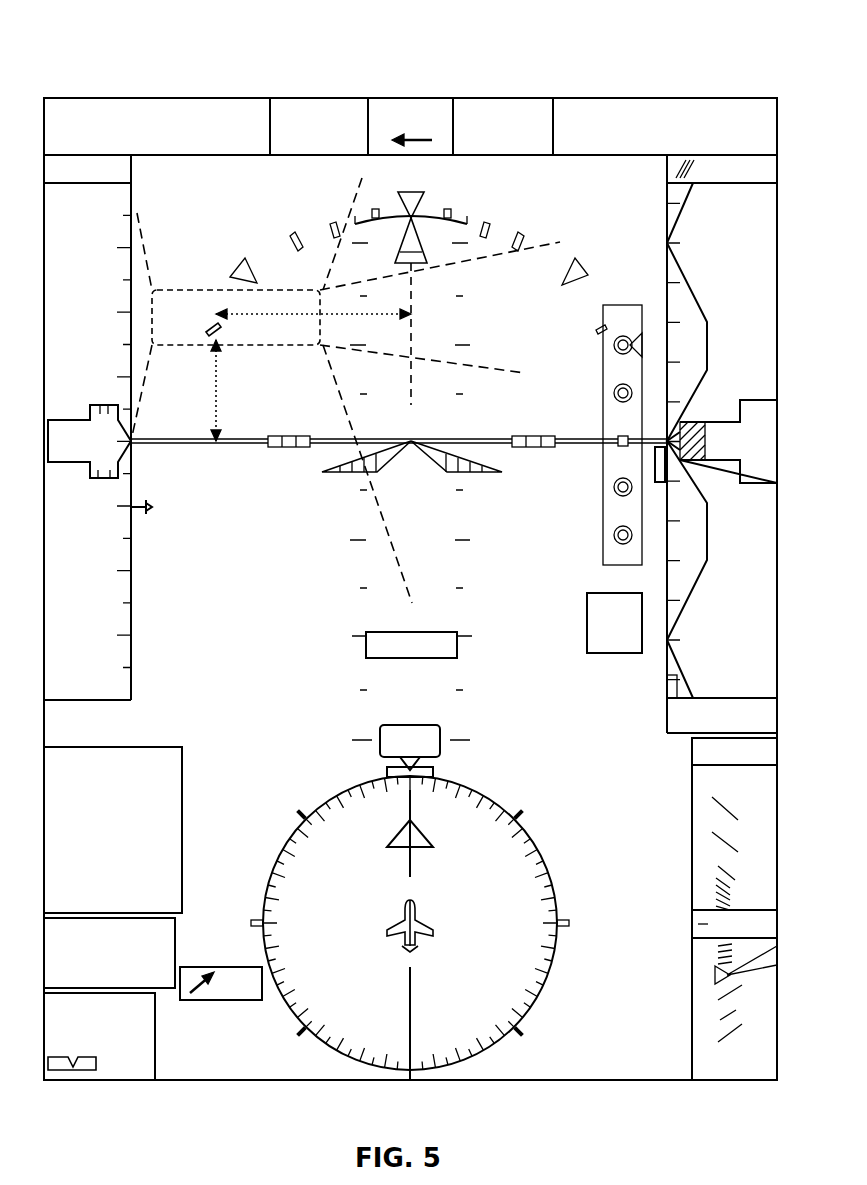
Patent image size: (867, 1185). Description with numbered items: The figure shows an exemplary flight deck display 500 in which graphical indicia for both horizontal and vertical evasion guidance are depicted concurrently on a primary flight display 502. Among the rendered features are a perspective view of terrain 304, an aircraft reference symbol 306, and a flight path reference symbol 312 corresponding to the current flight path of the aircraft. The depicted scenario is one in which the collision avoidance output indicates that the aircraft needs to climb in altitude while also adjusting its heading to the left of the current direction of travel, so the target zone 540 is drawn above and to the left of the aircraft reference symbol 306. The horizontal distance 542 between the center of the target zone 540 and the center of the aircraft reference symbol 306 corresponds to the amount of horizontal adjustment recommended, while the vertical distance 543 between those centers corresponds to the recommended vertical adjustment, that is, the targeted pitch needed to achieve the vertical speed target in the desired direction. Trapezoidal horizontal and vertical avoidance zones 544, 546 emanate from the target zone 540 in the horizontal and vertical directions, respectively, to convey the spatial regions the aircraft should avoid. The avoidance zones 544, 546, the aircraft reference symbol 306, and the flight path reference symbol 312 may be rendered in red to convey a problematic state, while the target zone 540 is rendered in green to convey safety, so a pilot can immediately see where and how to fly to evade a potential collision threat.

The flight deck display 500 is at (656, 51).
The primary flight display 502 is at (170, 178).
The target zone 540 is at (200, 290).
The horizontal distance 542 is at (298, 316).
The vertical distance 543 is at (215, 405).
The horizontal avoidance zone 544 is at (141, 285).
The vertical avoidance zone 546 is at (358, 192).
The aircraft reference symbol 306 is at (448, 475).
The flight path reference symbol 312 is at (288, 448).
The terrain 304 is at (623, 804).